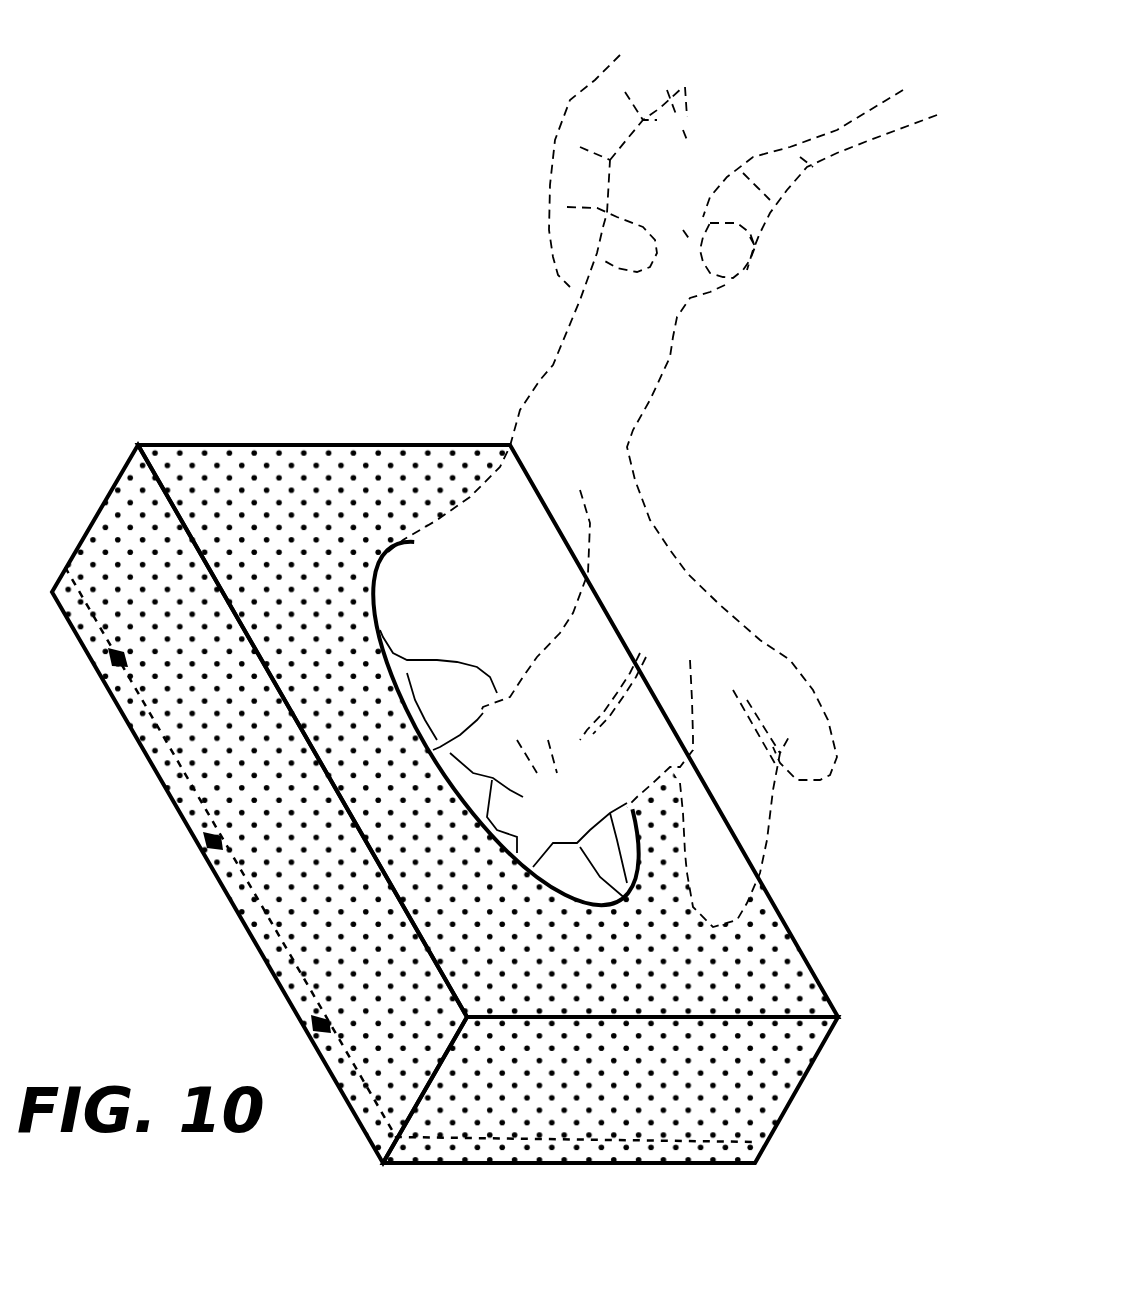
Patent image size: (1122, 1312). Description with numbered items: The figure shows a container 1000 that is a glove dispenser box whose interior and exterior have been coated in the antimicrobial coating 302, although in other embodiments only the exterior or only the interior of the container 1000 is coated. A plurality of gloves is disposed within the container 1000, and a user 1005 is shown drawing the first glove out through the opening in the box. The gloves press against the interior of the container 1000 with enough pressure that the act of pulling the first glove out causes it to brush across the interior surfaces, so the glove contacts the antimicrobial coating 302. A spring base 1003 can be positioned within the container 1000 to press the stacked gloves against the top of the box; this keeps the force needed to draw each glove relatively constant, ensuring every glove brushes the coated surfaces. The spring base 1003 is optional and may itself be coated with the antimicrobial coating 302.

The container 1000 is at (487, 609).
The antimicrobial coating 302 is at (468, 804).
The spring base 1003 is at (243, 879).
The user 1005 is at (585, 112).